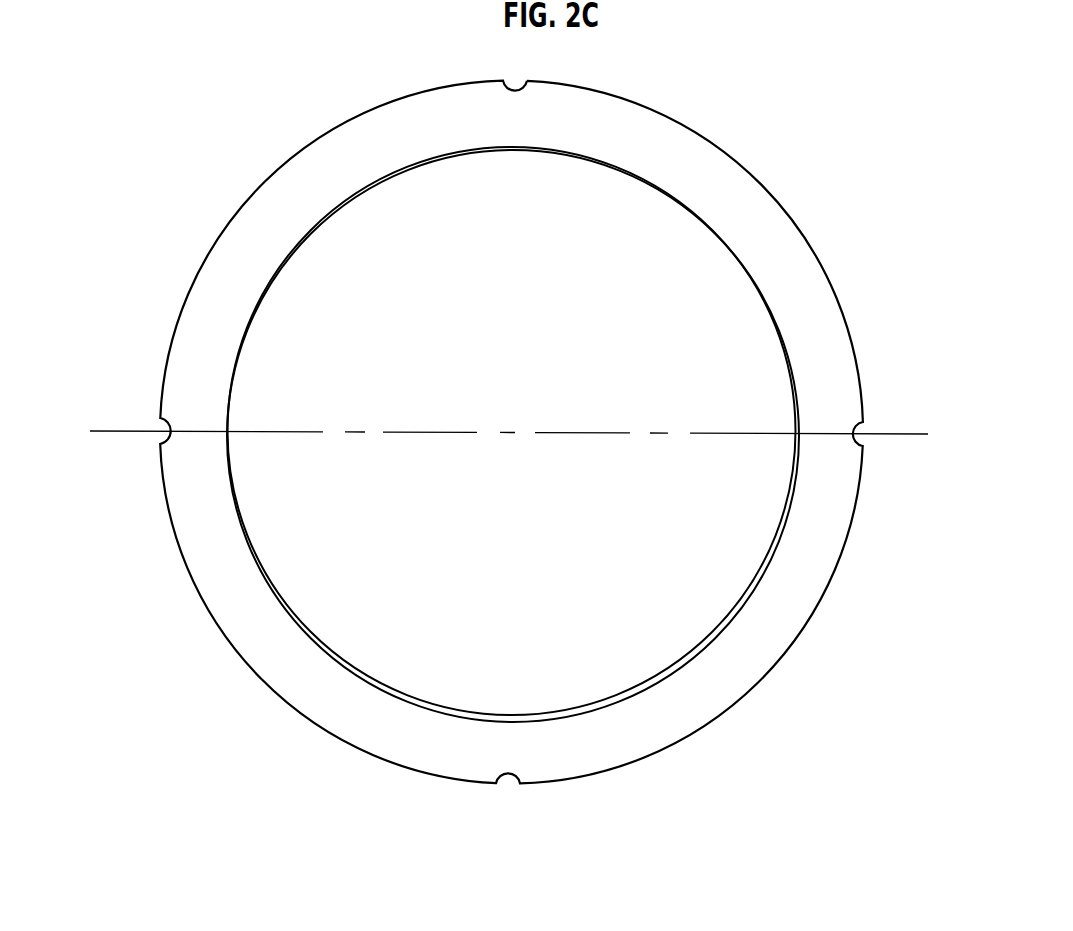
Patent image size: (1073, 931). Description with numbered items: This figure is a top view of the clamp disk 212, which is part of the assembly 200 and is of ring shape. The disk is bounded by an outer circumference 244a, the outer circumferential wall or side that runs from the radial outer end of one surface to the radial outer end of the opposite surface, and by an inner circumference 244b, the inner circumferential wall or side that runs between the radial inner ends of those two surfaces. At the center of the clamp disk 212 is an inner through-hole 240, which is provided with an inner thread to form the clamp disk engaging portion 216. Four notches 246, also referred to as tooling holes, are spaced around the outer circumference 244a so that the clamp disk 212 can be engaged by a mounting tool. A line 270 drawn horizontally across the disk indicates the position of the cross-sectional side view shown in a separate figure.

The lens assembly 200 is at (1070, 123).
The clamp disk 212 is at (862, 556).
The clamp disk engaging portion 216 is at (795, 402).
The inner through-hole 240 is at (309, 368).
The outer circumference 244a is at (738, 716).
The inner circumference 244b is at (780, 525).
The notches 246 is at (520, 79).
The line 270 is at (442, 445).